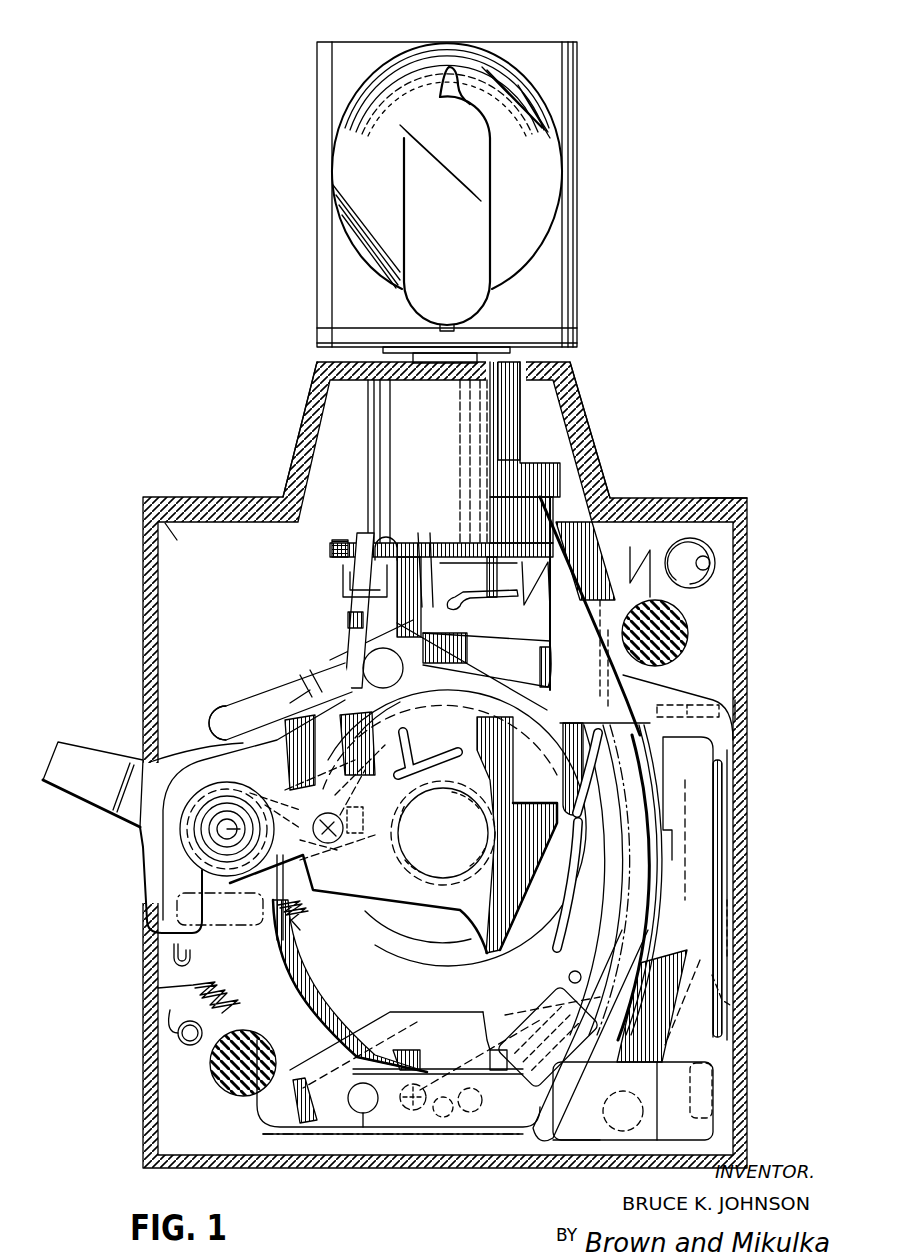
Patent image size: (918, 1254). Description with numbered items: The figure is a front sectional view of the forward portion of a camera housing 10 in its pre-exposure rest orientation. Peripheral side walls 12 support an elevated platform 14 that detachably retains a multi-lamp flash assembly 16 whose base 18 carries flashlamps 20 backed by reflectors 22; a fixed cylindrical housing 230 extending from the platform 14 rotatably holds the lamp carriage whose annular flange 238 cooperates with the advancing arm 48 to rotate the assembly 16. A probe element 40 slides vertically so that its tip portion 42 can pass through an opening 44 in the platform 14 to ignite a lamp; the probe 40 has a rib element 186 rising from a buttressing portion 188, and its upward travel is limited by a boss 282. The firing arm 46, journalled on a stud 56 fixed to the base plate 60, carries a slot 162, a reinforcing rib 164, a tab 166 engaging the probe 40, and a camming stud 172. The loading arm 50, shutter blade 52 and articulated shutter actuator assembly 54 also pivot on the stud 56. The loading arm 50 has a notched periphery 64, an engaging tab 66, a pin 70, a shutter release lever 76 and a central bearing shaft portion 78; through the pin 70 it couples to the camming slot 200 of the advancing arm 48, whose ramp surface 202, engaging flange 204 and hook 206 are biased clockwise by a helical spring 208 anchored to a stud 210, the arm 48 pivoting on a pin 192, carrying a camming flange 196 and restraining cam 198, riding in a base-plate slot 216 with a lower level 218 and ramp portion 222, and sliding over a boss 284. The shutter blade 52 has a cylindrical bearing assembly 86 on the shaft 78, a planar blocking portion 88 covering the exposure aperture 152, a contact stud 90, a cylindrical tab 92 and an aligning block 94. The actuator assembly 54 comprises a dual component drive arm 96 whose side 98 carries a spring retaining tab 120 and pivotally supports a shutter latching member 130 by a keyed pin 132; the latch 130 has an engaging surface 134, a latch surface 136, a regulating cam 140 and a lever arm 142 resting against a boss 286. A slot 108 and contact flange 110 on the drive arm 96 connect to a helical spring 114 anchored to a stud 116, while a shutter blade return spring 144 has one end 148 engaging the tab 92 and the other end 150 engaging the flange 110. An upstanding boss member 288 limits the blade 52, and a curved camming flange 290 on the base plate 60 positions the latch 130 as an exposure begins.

The camera housing 10 is at (720, 490).
The peripheral side walls 12 is at (143, 560).
The elevated platform 14 is at (584, 388).
The multi-lamp flash assembly 16 is at (578, 92).
The base 18 is at (575, 338).
The flashlamps 20 is at (462, 92).
The reflectors 22 is at (520, 82).
The probe element 40 is at (745, 746).
The tip portion 42 is at (510, 410).
The opening 44 is at (548, 364).
The impulse actuator or firing arm 46 is at (662, 842).
The advancing arm 48 is at (692, 690).
The loading arm 50 is at (290, 703).
The shutter blade 52 is at (540, 873).
The articulated shutter actuator assembly 54 is at (348, 1117).
The stud 56 is at (215, 815).
The base plate 60 is at (157, 500).
The notched periphery 64 is at (440, 1000).
The engaging tab 66 is at (492, 1066).
The pin 70 is at (372, 686).
The shutter release lever 76 is at (77, 762).
The central bearing shaft portion 78 is at (212, 843).
The cylindrical bearing assembly 86 is at (215, 852).
The planar blocking portion 88 is at (433, 845).
The cylindrical contact stud 90 is at (537, 800).
The cylindrical tab 92 is at (338, 866).
The aligning block 94 is at (384, 825).
The dual component drive arm 96 is at (300, 775).
The side 98 is at (320, 1000).
The slot 108 is at (327, 893).
The contact flange 110 is at (298, 760).
The helical spring 114 is at (158, 990).
The stud 116 is at (178, 1033).
The spring retaining tab 120 is at (173, 955).
The shutter latching member 130 is at (415, 1120).
The keyed pin 132 is at (367, 1113).
The engaging surface 134 is at (513, 1132).
The shutter engaging latch surface 136 is at (507, 1033).
The regulating cam 140 is at (593, 970).
The lever arm 142 is at (293, 1070).
The shutter blade return spring 144 is at (443, 809).
The spring end 148 is at (415, 856).
The spring end 150 is at (372, 727).
The exposure aperture 152 is at (464, 854).
The slot 162 is at (613, 753).
The reinforcing rib 164 is at (688, 723).
The tab 166 is at (690, 1032).
The camming stud 172 is at (740, 927).
The rib element 186 is at (667, 878).
The buttressing portion 188 is at (620, 1130).
The pin 192 is at (453, 1120).
The camming flange 196 is at (565, 974).
The restraining cam 198 is at (745, 985).
The camming slot 200 is at (345, 590).
The ramp surface 202 is at (347, 613).
The engaging flange 204 is at (447, 560).
The hook 206 is at (480, 605).
The helical spring 208 is at (655, 545).
The stud 210 is at (710, 562).
The slot 216 is at (247, 700).
The lower level 218 is at (226, 710).
The ramp portion 222 is at (313, 670).
The fixed cylindrical housing 230 is at (376, 453).
The annular flange 238 is at (343, 540).
The boss 282 is at (690, 645).
The boss 284 is at (735, 708).
The boss 286 is at (225, 1083).
The upstanding boss member 288 is at (435, 755).
The camming flange 290 is at (562, 922).